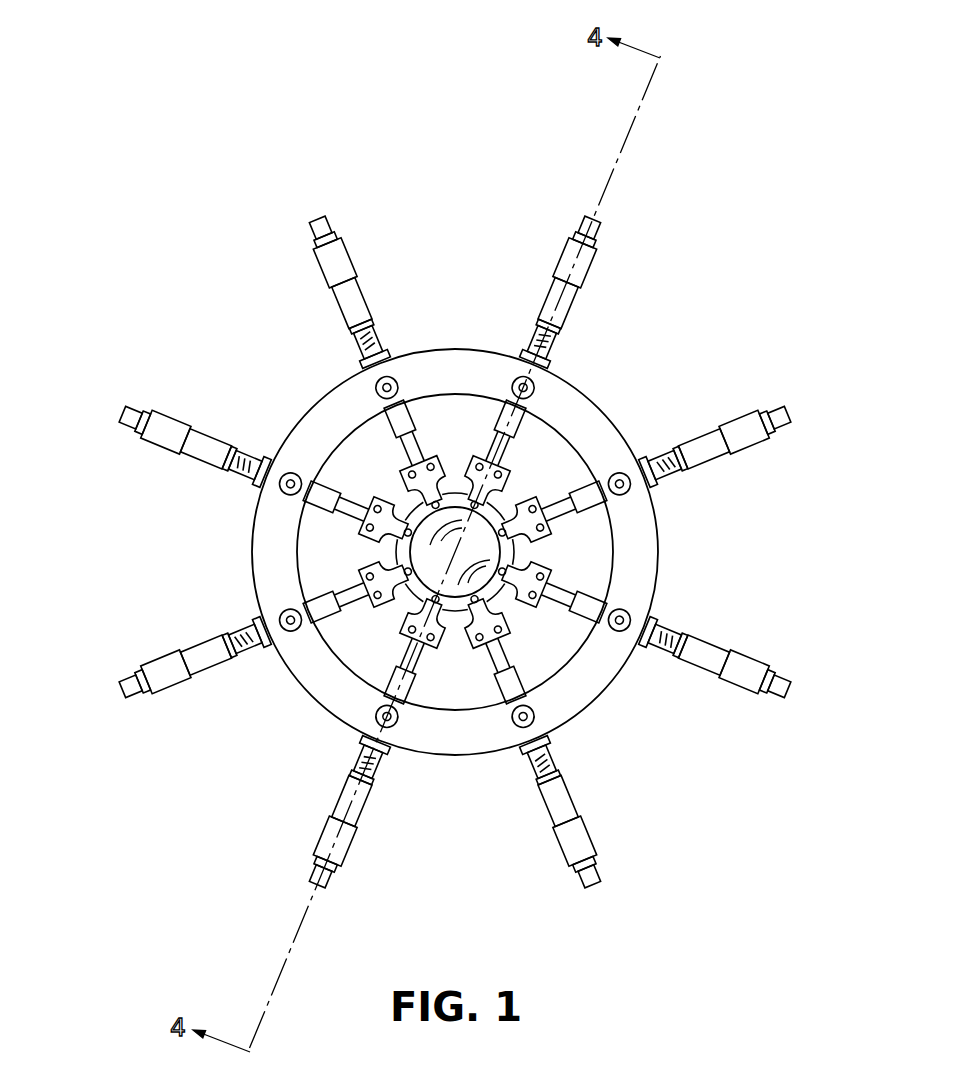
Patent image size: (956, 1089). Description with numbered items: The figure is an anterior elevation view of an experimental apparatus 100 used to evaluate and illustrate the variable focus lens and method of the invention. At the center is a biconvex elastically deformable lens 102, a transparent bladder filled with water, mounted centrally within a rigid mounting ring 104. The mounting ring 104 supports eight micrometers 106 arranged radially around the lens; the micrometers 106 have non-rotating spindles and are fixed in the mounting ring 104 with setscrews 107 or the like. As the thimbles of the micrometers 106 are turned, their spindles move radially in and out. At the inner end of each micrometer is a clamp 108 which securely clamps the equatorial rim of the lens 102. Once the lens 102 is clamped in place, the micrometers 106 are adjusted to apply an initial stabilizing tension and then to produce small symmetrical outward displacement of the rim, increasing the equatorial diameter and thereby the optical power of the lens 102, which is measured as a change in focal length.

The experimental apparatus 100 is at (459, 561).
The biconvex elastically deformable lens 102 is at (430, 572).
The rigid mounting ring 104 is at (320, 402).
The micrometers 106 is at (317, 219).
The setscrews 107 is at (509, 383).
The clamp 108 is at (403, 476).